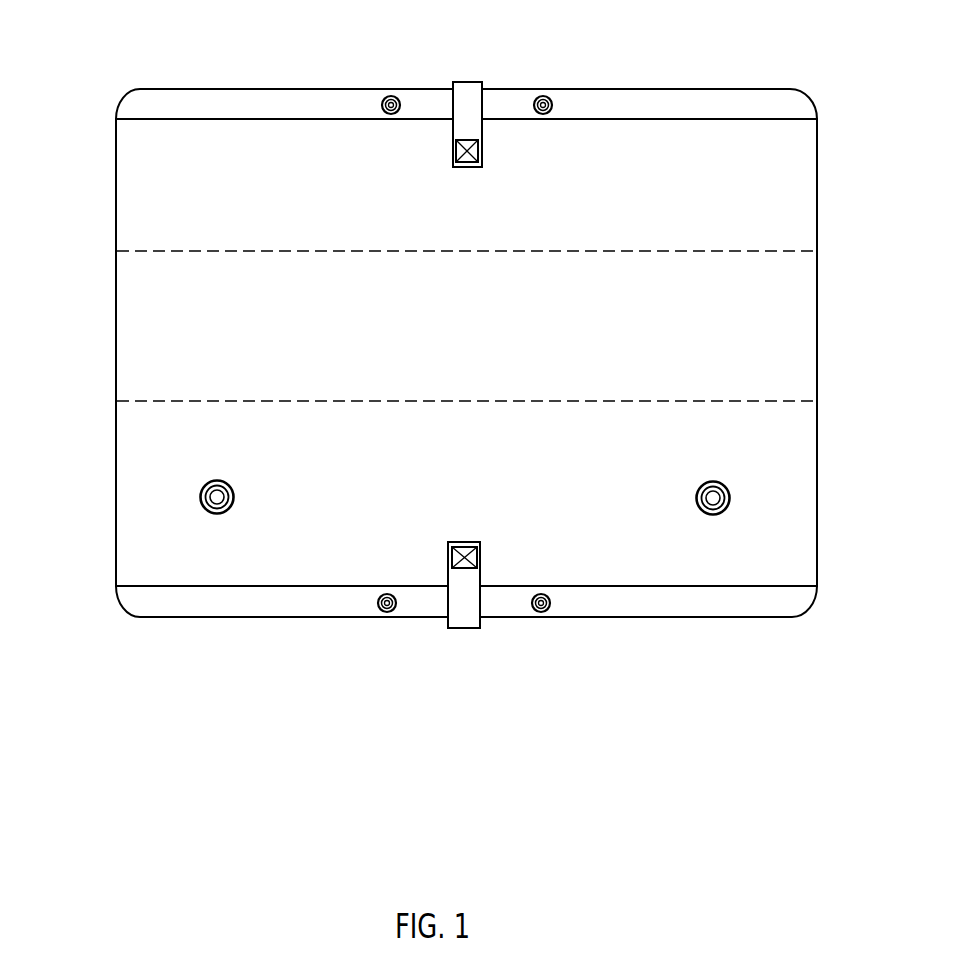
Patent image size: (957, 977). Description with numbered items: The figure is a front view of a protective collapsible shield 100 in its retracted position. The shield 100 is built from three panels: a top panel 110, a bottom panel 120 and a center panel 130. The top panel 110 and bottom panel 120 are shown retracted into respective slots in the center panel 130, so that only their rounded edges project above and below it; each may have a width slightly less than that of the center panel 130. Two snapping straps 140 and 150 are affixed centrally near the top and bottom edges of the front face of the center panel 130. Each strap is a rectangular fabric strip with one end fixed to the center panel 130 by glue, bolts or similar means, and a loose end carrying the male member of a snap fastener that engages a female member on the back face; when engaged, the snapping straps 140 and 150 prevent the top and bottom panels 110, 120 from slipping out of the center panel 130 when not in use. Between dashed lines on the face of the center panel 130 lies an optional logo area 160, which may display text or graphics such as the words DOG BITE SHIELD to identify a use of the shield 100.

The protective collapsible shield 100 is at (482, 36).
The top panel 110 is at (147, 108).
The bottom panel 120 is at (138, 610).
The center panel 130 is at (135, 227).
The snapping strap 140 is at (453, 150).
The snapping strap 150 is at (457, 580).
The logo area 160 is at (777, 325).